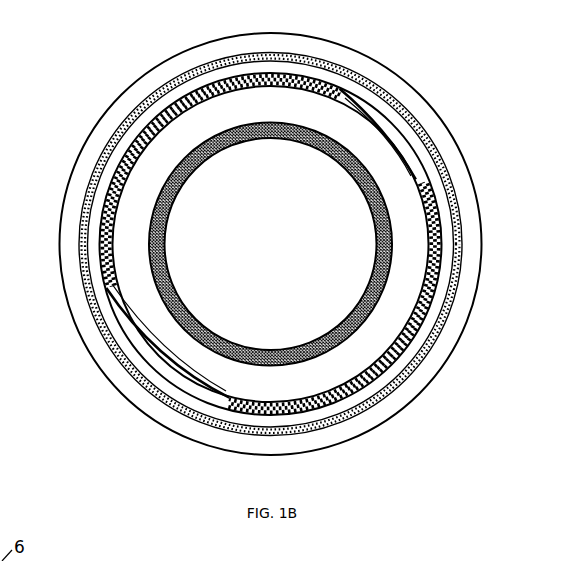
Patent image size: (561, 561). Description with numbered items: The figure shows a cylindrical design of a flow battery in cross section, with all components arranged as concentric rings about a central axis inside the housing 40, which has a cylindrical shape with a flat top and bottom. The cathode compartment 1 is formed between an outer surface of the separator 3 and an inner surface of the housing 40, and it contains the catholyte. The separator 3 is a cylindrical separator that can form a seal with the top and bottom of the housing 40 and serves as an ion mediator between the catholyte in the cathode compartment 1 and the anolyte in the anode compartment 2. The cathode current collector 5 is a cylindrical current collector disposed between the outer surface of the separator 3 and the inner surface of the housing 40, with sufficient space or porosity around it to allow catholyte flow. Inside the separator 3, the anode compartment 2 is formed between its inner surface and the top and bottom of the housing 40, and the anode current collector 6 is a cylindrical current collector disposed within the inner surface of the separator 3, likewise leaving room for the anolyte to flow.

The cathode compartment 1 is at (290, 244).
The anode compartment 2 is at (258, 250).
The separator 3 is at (157, 372).
The cathode current collector 5 is at (392, 392).
The anode current collector 6 is at (220, 342).
The housing 40 is at (447, 362).